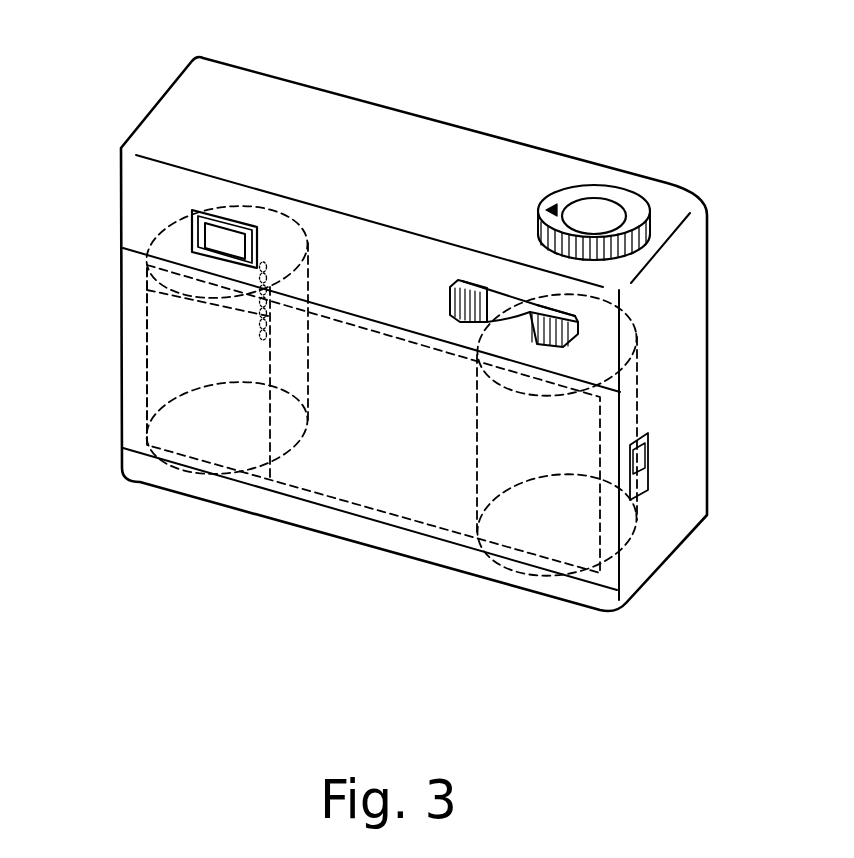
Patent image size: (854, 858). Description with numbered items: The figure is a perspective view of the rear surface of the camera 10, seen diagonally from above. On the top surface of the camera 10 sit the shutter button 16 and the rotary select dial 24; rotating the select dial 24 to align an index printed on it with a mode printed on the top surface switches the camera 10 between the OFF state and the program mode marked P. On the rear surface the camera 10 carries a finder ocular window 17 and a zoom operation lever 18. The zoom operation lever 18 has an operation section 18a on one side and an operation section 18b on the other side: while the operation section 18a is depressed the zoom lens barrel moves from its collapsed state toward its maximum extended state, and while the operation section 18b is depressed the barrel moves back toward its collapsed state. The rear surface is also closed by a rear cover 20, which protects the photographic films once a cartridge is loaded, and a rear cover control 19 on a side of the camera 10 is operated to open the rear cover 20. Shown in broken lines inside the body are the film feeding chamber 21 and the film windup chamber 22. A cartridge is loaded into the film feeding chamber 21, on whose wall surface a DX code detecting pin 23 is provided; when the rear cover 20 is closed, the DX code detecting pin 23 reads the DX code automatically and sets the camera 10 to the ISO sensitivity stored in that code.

The camera 10 is at (517, 117).
The shutter button 16 is at (597, 207).
The finder ocular window 17 is at (218, 233).
The zoom operation lever 18 is at (500, 303).
The operation section 18a is at (570, 324).
The operation section 18b is at (463, 287).
The rear cover control 19 is at (650, 452).
The rear cover 20 is at (407, 508).
The film feeding chamber 21 is at (187, 336).
The film windup chamber 22 is at (543, 440).
The DX code detecting pin 23 is at (145, 289).
The rotary select dial 24 is at (647, 211).